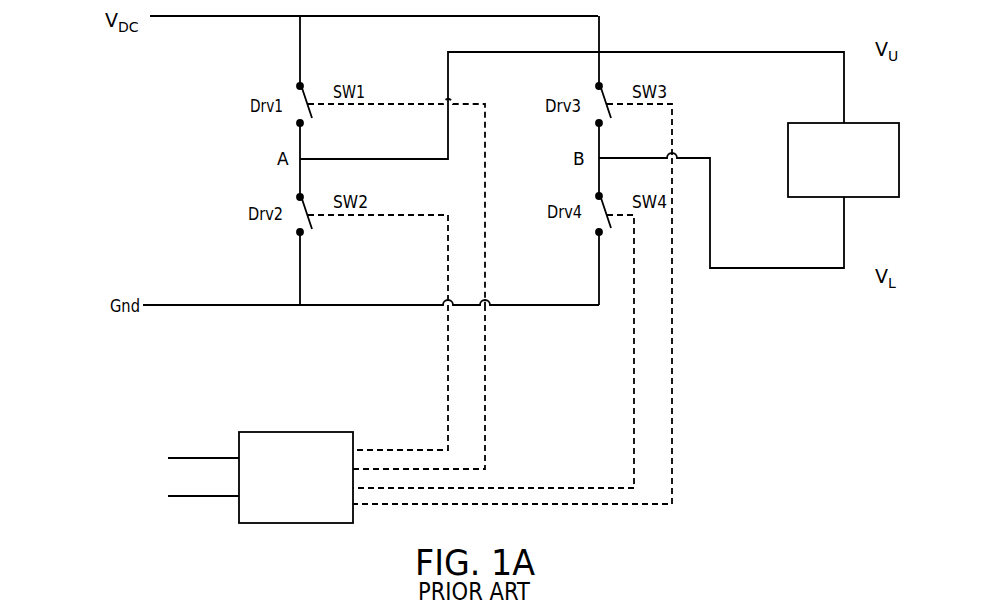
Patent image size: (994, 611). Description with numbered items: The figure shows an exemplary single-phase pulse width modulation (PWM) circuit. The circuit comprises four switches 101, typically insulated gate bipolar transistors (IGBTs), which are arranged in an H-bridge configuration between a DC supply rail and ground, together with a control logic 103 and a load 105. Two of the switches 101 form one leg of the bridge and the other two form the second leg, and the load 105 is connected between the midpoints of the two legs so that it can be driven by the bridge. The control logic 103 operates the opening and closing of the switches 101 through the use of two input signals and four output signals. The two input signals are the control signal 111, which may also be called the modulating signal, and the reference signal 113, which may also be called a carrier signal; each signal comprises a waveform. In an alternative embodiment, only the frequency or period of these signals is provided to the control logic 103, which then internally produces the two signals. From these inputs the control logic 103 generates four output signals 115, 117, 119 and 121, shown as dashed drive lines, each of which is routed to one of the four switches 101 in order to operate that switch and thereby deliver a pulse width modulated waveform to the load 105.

The switches 101 is at (308, 97).
The control logic 103 is at (320, 432).
The load 105 is at (880, 198).
The control signal 111 is at (134, 459).
The reference signal 113 is at (164, 498).
The output signal 115 is at (488, 420).
The output signal 117 is at (446, 420).
The output signal 119 is at (632, 445).
The output signal 121 is at (676, 445).